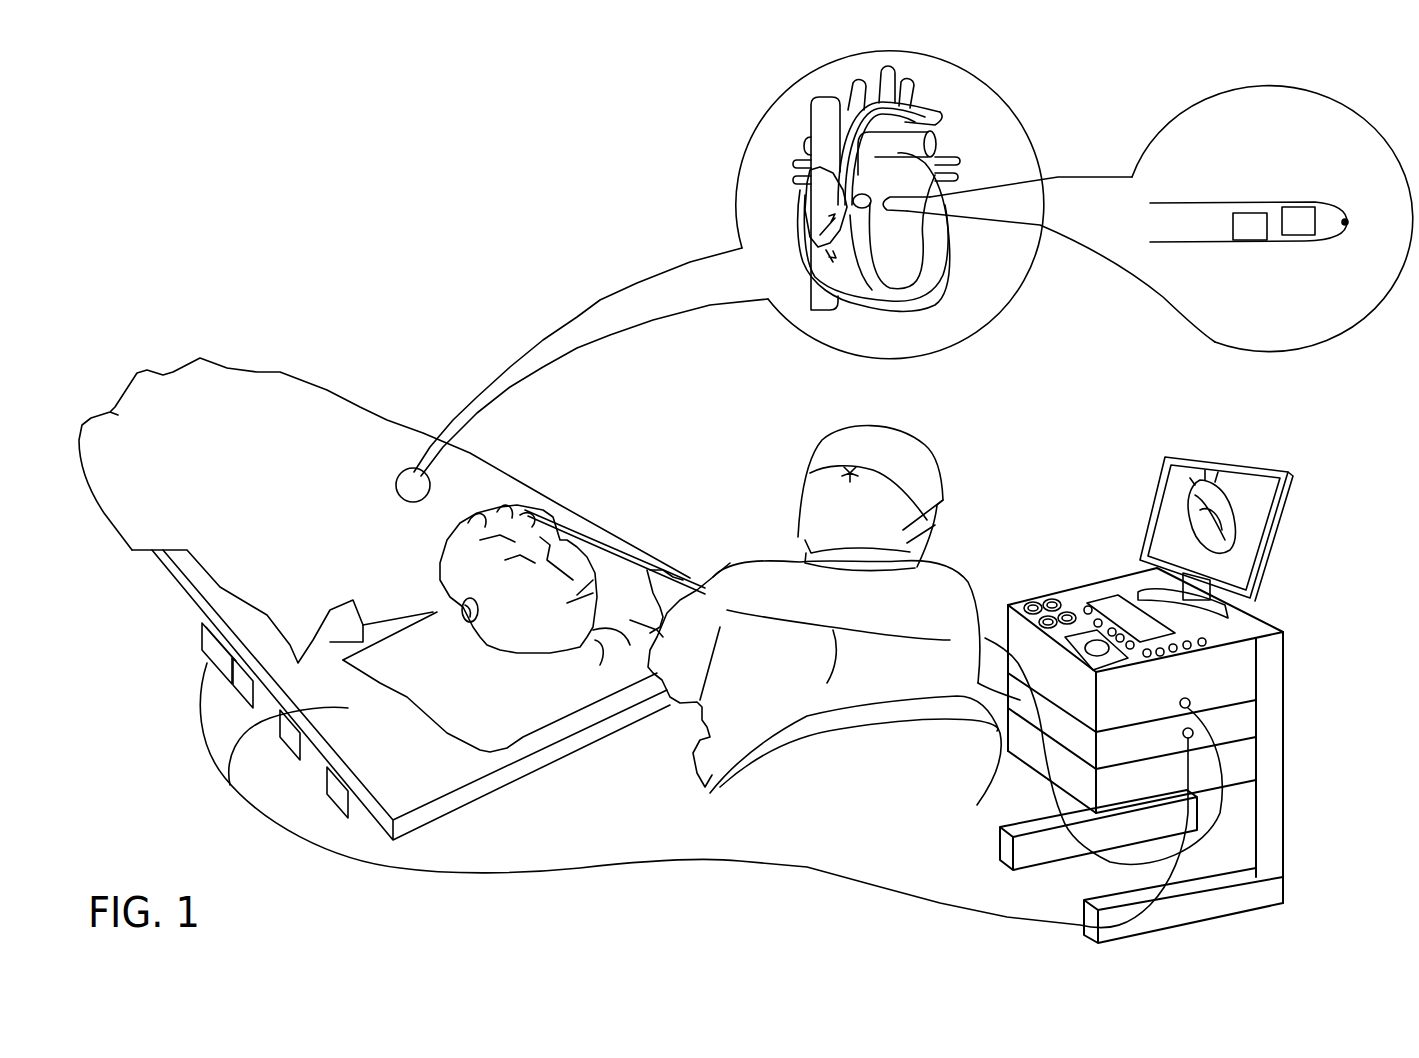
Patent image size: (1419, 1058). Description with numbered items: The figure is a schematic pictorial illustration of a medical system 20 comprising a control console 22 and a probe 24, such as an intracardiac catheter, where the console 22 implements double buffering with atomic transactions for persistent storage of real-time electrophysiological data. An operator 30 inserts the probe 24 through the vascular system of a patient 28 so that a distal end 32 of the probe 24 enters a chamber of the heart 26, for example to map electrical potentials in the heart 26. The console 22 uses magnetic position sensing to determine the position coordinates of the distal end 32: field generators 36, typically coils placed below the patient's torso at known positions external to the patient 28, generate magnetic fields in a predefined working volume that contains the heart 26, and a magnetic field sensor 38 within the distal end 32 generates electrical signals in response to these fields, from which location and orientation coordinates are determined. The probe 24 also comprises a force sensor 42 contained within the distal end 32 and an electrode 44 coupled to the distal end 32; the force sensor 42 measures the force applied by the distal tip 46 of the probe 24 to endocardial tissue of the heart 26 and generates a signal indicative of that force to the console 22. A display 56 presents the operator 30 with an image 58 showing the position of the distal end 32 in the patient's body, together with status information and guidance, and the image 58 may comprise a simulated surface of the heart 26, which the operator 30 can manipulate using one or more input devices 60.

The medical system 20 is at (1083, 418).
The control console 22 is at (1172, 733).
The probe 24 is at (613, 542).
The heart 26 is at (940, 283).
The patient 28 is at (510, 633).
The operator 30 is at (730, 562).
The distal end 32 is at (937, 113).
The field generators 36 is at (305, 767).
The magnetic field sensor 38 is at (1250, 212).
The force sensor 42 is at (1300, 207).
The electrode 44 is at (1350, 220).
The distal tip 46 is at (925, 197).
The display 56 is at (1222, 529).
The image 58 is at (1183, 507).
The input devices 60 is at (1068, 612).